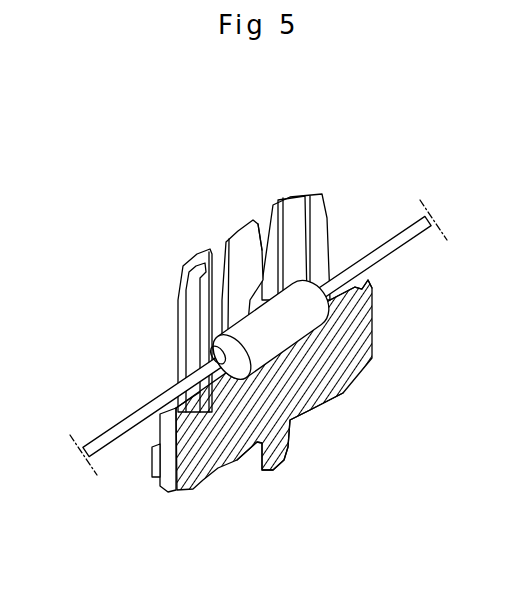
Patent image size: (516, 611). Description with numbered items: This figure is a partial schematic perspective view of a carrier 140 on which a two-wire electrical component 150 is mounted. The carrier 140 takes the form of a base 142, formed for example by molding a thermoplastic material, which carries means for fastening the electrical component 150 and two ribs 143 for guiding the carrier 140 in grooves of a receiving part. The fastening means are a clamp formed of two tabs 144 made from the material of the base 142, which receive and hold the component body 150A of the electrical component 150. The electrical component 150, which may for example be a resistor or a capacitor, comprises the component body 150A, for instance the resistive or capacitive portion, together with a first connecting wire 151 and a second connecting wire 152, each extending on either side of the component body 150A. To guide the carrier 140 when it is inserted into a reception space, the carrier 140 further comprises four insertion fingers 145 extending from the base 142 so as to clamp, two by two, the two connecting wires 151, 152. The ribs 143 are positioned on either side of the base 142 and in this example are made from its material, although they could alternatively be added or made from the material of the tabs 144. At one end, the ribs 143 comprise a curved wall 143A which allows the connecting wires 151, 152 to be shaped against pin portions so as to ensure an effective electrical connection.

The carrier 140 is at (224, 197).
The base 142 is at (307, 380).
The ribs 143 is at (372, 340).
The curved wall 143A is at (368, 282).
The tabs 144 is at (238, 233).
The insertion fingers 145 is at (193, 270).
The electrical component 150 is at (387, 207).
The component body 150A is at (250, 337).
The first connecting wire 151 is at (122, 433).
The second connecting wire 152 is at (417, 232).